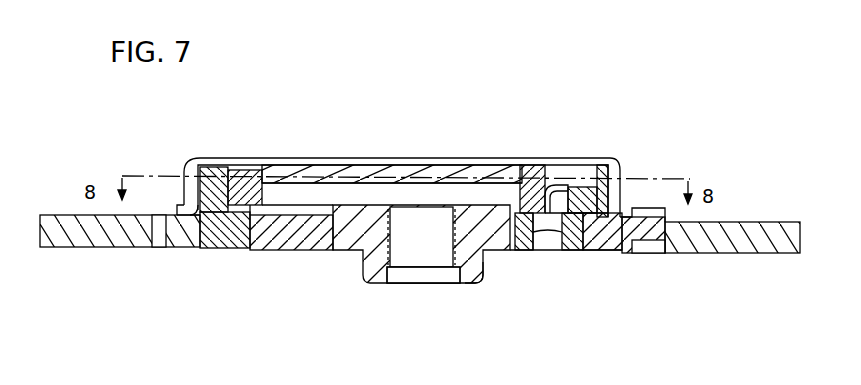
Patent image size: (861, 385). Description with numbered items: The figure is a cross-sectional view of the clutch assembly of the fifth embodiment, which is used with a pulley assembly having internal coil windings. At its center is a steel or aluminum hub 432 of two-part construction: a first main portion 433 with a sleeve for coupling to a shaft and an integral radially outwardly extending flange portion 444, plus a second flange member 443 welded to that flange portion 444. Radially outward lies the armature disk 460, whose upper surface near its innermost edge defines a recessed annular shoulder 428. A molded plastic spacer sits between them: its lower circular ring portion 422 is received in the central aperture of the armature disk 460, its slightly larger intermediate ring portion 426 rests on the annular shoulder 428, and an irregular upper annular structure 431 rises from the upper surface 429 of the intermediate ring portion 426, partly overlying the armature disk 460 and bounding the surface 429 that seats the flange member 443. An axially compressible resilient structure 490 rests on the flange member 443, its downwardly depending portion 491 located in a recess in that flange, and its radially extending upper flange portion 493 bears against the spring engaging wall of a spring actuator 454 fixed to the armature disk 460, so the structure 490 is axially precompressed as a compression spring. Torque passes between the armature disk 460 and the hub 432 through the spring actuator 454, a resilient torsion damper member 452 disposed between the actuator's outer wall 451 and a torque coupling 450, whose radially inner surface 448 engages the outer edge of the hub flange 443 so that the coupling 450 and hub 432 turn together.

The lower circular ring portion 422 is at (268, 246).
The intermediate ring portion 426 is at (234, 232).
The annular shoulder 428 is at (607, 242).
The upper surface 429 is at (347, 160).
The upper annular structure 431 is at (200, 236).
The hub 432 is at (486, 270).
The first main portion 433 is at (472, 283).
The flange member 443 is at (299, 160).
The flange portion 444 is at (345, 252).
The radially inner surface 448 is at (566, 240).
The torque coupling 450 is at (257, 160).
The outer wall 451 is at (196, 195).
The resilient torsion damper member 452 is at (222, 158).
The spring actuator 454 is at (612, 157).
The armature disk 460 is at (752, 228).
The axially compressible resilient structure 490 is at (522, 178).
The downwardly depending portion 491 is at (510, 180).
The upper flange portion 493 is at (560, 180).